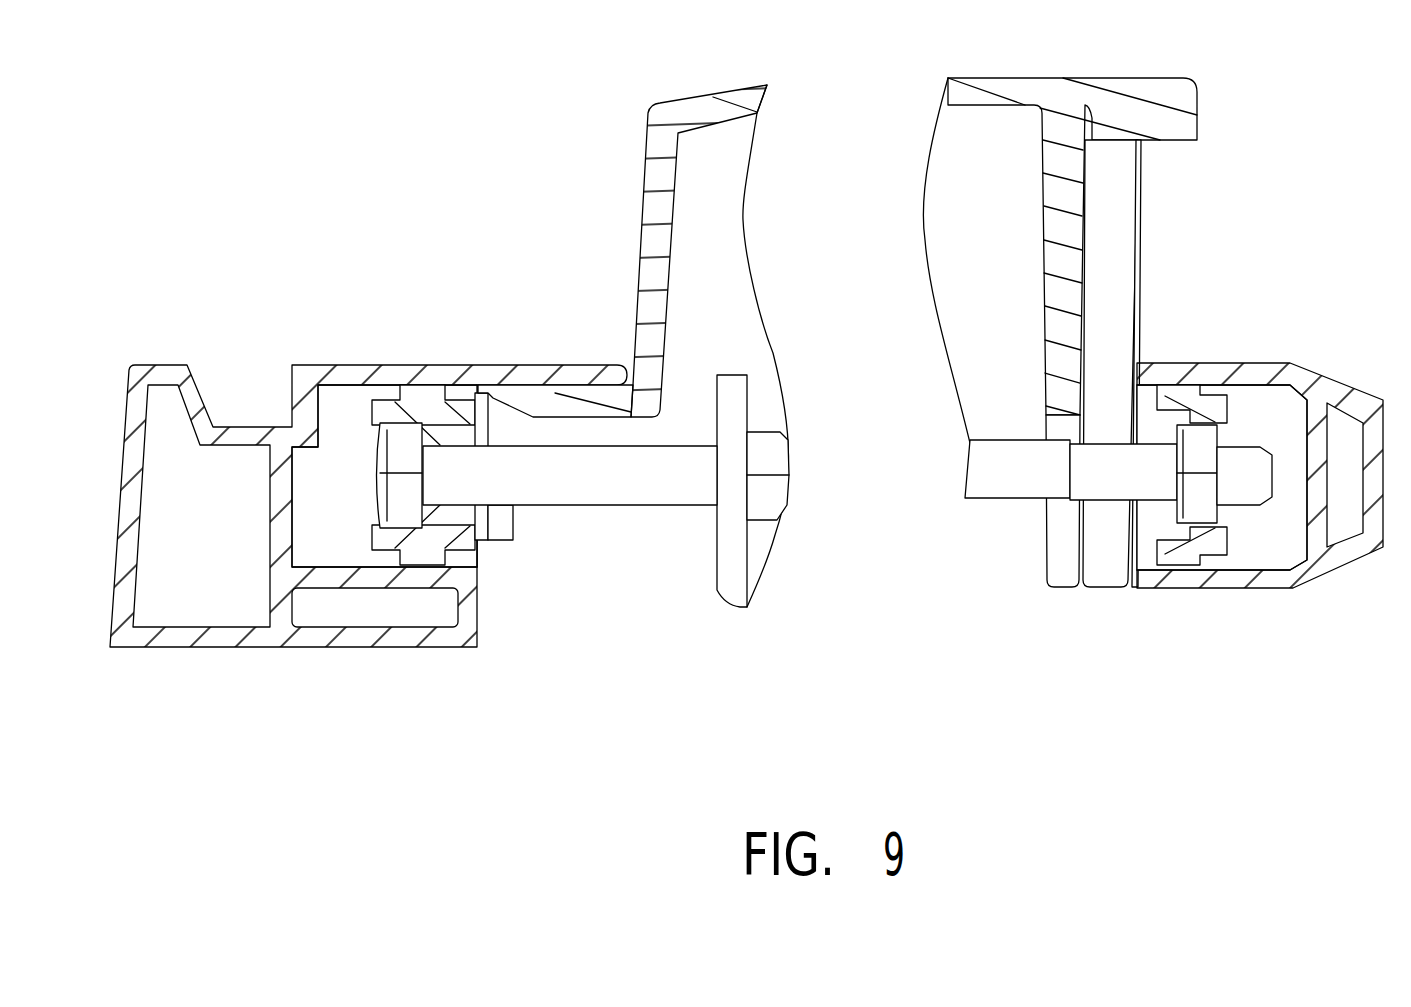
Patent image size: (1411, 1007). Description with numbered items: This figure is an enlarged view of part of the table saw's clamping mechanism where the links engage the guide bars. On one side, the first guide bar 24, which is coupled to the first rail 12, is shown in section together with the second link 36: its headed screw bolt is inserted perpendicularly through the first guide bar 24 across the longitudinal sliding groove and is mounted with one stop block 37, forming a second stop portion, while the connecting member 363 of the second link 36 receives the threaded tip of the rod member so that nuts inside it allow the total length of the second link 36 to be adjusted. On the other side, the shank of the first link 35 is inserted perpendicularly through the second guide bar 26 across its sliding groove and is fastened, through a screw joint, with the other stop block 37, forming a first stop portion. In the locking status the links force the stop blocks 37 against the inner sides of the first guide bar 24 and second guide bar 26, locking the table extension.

The first rail 12 is at (583, 405).
The first guide bar 24 is at (307, 363).
The second guide bar 26 is at (1333, 385).
The first link 35 is at (1000, 497).
The second link 36 is at (577, 505).
The connecting member 363 is at (723, 600).
The stop block 37 is at (417, 405).